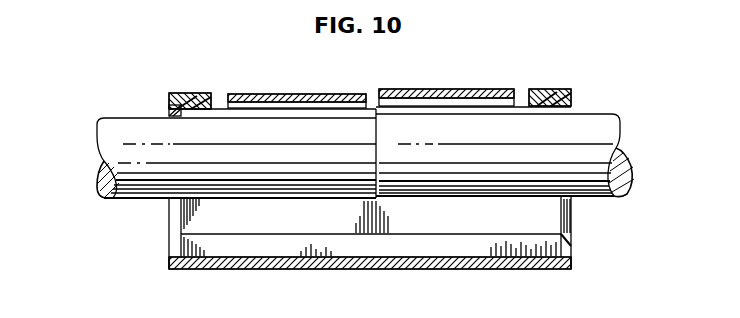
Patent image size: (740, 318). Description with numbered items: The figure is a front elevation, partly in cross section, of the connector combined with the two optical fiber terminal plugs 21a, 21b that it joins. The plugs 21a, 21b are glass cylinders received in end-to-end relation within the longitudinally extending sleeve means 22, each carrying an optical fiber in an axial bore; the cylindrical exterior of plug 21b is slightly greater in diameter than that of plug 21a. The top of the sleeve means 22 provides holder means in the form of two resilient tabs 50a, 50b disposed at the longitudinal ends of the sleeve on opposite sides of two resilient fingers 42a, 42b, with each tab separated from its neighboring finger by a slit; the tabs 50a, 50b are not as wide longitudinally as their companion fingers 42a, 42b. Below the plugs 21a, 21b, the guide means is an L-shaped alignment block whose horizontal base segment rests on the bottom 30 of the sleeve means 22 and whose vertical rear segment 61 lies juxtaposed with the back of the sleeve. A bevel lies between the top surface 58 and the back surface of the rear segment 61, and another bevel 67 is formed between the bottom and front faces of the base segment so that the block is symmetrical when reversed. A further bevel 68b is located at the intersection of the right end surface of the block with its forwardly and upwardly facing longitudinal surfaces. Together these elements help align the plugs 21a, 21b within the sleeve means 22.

The optical fiber terminal plug 21a is at (111, 136).
The optical fiber terminal plug 21b is at (596, 120).
The sleeve means 22 is at (390, 299).
The bottom of sleeve 30 is at (310, 268).
The resilient finger 42a is at (305, 92).
The resilient finger 42b is at (435, 87).
The resilient tab 50a is at (183, 92).
The resilient tab 50b is at (536, 88).
The top surface of rear segment 58 is at (213, 107).
The vertical rear segment 61 is at (168, 112).
The bevel 67 is at (571, 246).
The bevel 68b is at (571, 212).